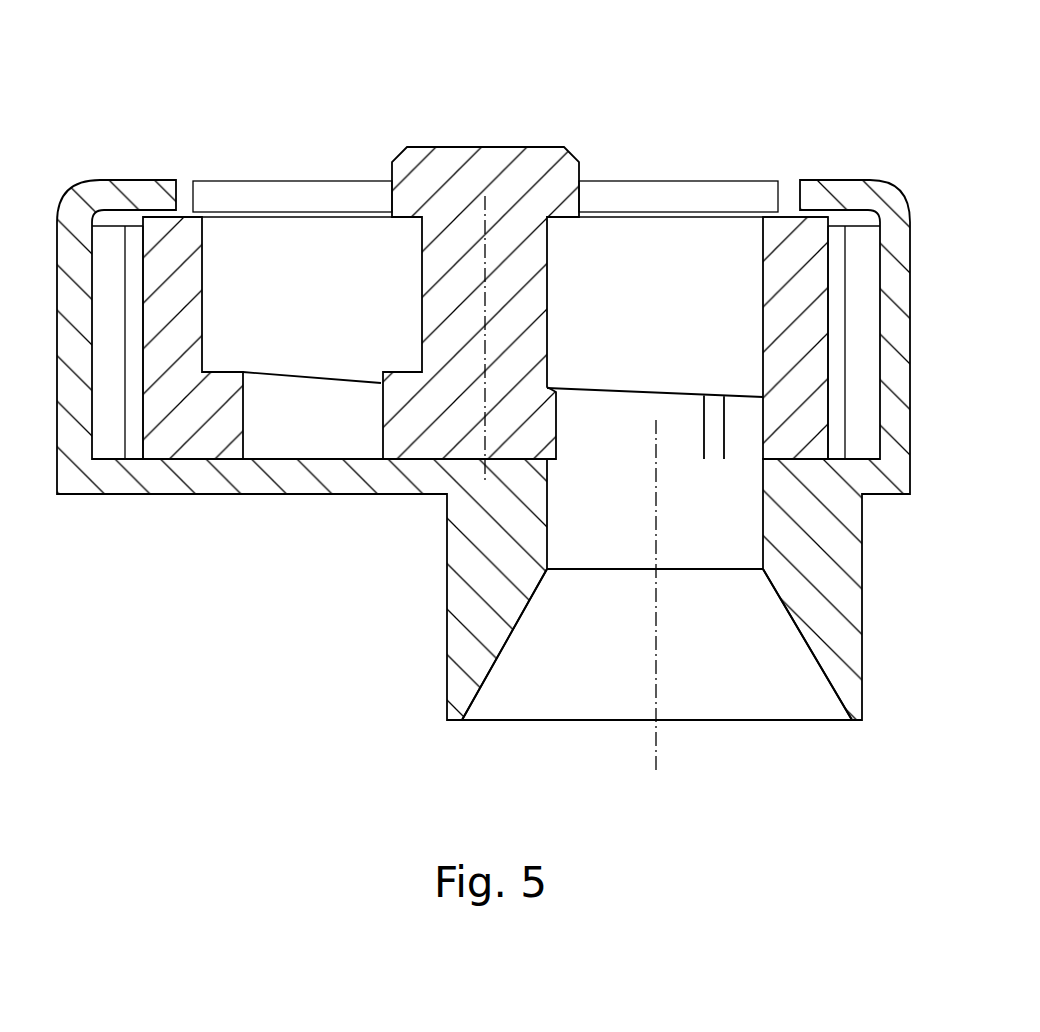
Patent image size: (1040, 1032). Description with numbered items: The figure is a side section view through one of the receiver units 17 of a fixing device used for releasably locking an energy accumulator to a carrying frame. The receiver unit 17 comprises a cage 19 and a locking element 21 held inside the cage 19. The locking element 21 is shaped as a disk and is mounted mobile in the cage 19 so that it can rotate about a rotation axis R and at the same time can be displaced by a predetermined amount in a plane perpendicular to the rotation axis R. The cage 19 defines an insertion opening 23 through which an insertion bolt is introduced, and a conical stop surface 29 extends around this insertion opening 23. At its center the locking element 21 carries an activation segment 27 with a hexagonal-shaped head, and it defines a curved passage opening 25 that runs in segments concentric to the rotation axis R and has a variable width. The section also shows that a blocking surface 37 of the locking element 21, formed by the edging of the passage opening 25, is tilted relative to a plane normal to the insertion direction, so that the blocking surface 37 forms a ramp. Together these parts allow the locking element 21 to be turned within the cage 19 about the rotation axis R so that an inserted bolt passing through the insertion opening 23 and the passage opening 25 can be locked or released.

The receiver unit 17 is at (136, 122).
The cage 19 is at (898, 306).
The locking element 21 is at (798, 258).
The insertion opening 23 is at (712, 545).
The passage opening 25 is at (598, 418).
The activation segment 27 is at (455, 215).
The conical stop surface 29 is at (503, 655).
The blocking surface 37 is at (222, 366).
The rotation axis R is at (487, 220).